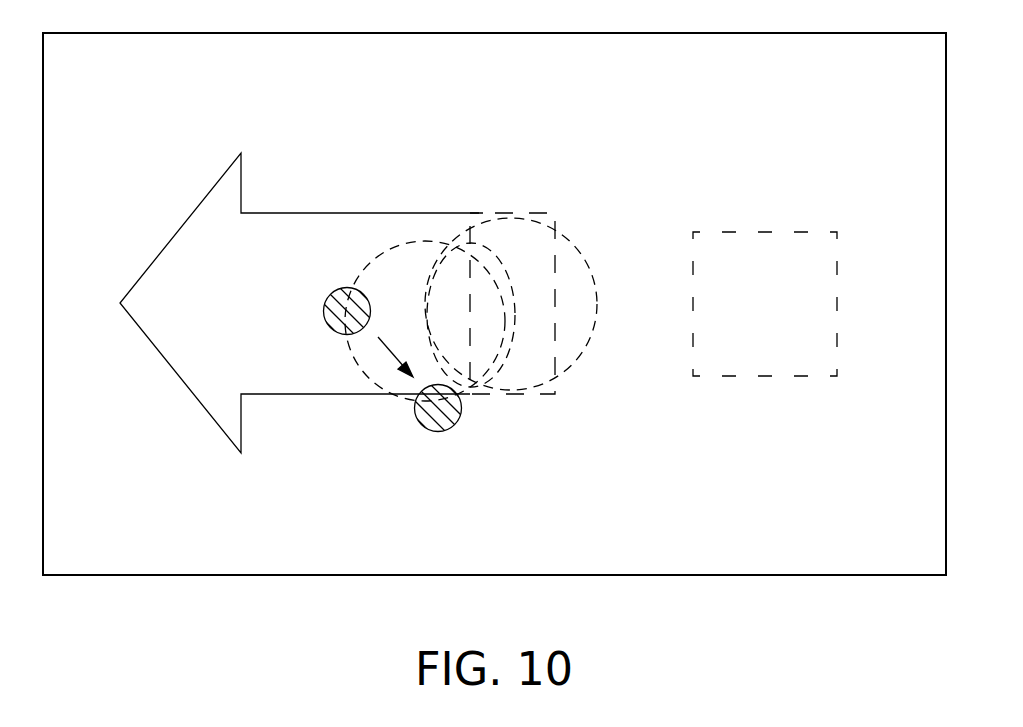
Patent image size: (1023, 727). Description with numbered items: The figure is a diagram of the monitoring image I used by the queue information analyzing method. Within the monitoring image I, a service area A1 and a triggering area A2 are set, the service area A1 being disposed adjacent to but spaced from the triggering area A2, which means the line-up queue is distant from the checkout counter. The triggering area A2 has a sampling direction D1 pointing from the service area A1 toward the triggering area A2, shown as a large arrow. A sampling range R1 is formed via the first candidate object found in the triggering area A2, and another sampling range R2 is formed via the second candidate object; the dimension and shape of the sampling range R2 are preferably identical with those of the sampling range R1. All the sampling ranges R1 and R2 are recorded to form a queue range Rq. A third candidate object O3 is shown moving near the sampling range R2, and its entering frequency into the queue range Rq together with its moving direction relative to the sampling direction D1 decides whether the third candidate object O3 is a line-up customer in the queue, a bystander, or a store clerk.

The monitoring image I is at (946, 122).
The sampling direction D1 is at (277, 303).
The service area A1 is at (758, 232).
The triggering area A2 is at (510, 213).
The queue range Rq is at (471, 242).
The sampling range R1 is at (497, 220).
The sampling range R2 is at (485, 135).
The third candidate object O3 is at (338, 326).